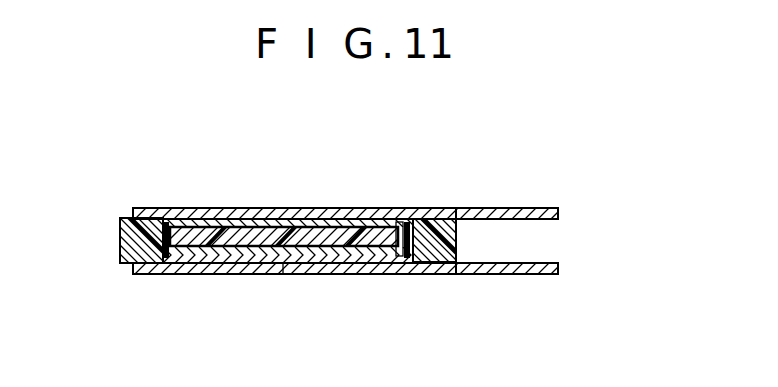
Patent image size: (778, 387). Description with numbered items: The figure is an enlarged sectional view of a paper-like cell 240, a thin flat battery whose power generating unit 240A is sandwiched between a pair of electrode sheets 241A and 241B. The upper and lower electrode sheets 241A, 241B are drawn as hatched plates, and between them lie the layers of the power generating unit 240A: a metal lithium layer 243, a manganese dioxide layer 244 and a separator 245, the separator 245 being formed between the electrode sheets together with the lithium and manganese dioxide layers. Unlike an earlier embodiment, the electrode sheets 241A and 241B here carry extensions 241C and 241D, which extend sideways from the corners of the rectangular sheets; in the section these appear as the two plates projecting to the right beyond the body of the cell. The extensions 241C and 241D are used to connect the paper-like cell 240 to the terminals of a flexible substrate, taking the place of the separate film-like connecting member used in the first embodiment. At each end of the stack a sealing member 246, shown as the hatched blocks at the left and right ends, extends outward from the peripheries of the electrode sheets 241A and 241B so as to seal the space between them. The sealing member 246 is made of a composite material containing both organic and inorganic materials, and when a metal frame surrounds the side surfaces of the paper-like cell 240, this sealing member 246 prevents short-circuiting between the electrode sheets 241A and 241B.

The paper-like cell 240 is at (296, 231).
The power generating unit 240A is at (195, 270).
The electrode sheet 241A is at (303, 214).
The electrode sheet 241B is at (294, 271).
The extension 241C is at (517, 213).
The extension 241D is at (517, 276).
The metal lithium layer 243 is at (370, 219).
The manganese dioxide layer 244 is at (399, 262).
The separator 245 is at (348, 255).
The sealing member 246 is at (118, 241).